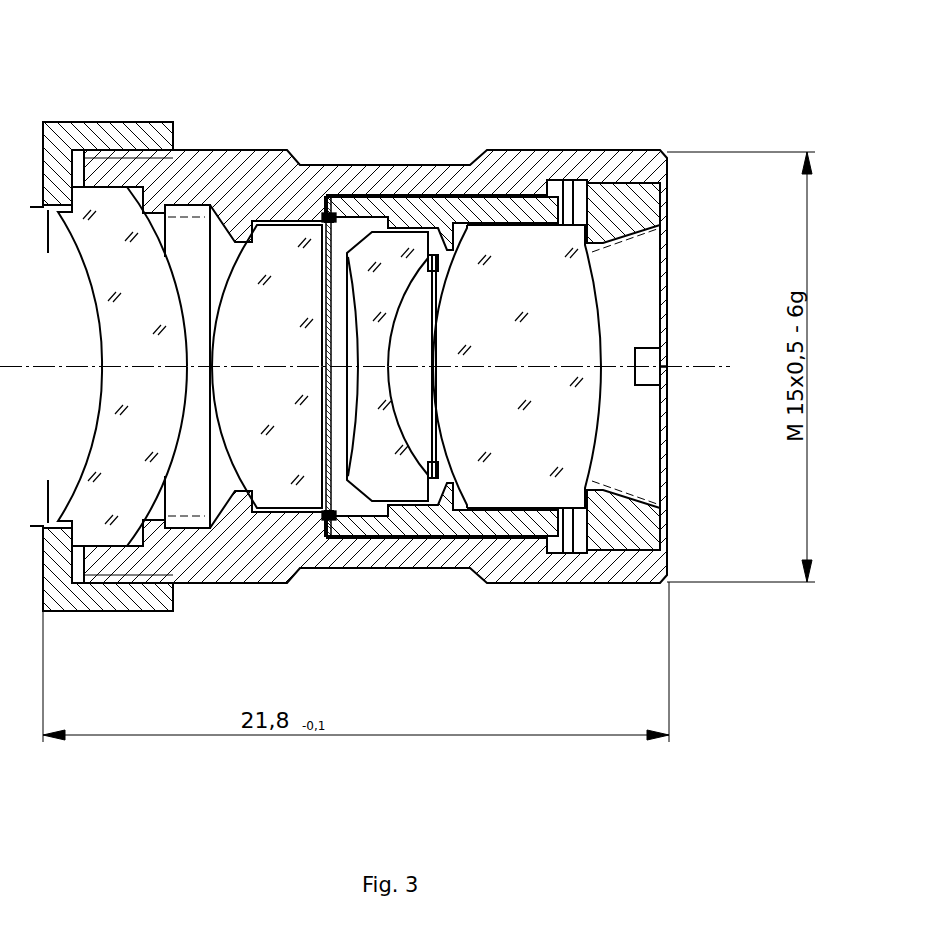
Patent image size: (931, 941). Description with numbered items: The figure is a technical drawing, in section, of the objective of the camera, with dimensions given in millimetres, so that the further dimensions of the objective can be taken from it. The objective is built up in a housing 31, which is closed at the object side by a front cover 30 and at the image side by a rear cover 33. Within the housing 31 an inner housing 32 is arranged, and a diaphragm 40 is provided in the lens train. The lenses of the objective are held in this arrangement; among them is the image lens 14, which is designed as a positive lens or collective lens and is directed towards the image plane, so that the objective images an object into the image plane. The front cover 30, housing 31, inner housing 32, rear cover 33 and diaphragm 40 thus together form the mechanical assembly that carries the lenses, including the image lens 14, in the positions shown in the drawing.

The front cover 30 is at (63, 140).
The housing 31 is at (225, 168).
The diaphragm 40 is at (327, 213).
The inner housing 32 is at (443, 213).
The image lens 14 is at (515, 293).
The rear cover 33 is at (613, 208).